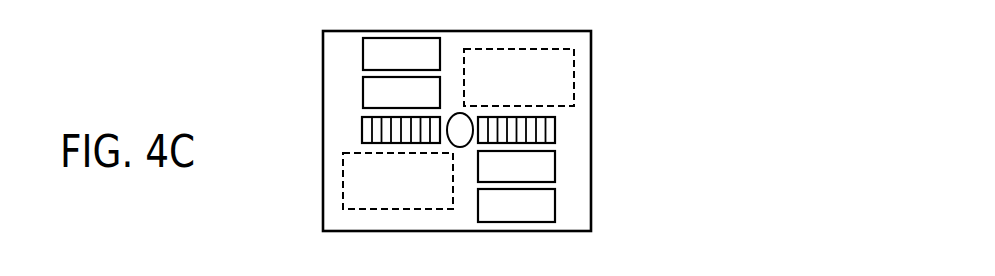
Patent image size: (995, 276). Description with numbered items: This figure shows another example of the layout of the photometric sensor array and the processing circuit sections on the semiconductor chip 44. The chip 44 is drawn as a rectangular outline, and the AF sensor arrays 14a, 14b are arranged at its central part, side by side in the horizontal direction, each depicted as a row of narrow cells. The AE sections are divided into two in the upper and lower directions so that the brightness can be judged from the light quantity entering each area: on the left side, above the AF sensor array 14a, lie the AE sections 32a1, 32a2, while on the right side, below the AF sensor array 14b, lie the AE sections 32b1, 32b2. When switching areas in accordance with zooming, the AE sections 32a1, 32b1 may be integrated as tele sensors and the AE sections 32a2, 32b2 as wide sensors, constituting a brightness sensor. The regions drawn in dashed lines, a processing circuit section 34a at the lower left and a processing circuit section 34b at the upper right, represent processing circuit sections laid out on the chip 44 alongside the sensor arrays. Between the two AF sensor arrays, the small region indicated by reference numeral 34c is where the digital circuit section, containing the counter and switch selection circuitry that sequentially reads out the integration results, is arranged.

The chip 44 is at (591, 49).
The AE section 32a1 is at (363, 52).
The AE section 32a2 is at (362, 91).
The AF sensor array 14a is at (362, 127).
The processing circuit section 34a is at (340, 184).
The digital circuit section 34c is at (455, 114).
The processing circuit section 34b is at (574, 81).
The AF sensor array 14b is at (555, 126).
The AE section 32b1 is at (555, 163).
The AE section 32b2 is at (555, 200).